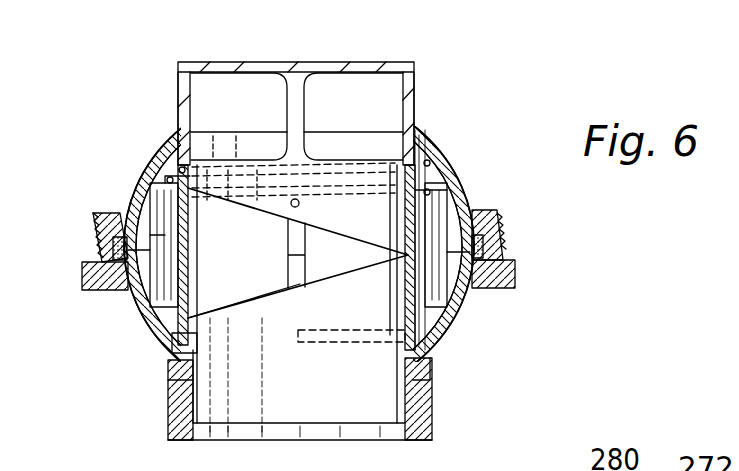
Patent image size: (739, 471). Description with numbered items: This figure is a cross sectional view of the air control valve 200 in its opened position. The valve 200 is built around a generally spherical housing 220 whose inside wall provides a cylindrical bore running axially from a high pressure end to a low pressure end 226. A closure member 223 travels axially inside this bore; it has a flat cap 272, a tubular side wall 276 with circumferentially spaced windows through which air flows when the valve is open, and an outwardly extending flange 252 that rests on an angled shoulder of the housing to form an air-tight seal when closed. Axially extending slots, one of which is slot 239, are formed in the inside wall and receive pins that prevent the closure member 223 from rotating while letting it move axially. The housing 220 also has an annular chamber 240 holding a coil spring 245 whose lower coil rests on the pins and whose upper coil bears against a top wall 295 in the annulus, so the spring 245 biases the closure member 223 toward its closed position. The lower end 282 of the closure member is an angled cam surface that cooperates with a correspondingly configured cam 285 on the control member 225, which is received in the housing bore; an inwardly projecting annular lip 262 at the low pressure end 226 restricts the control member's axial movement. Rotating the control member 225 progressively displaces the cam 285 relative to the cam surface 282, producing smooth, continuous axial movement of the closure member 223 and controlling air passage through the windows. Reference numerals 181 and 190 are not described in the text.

The air control valve 200 is at (130, 324).
The retaining ring 181 is at (190, 408).
The base plate 190 is at (427, 433).
The housing 220 is at (458, 190).
The closure member 223 is at (312, 87).
The control member 225 is at (416, 398).
The low pressure end 226 is at (420, 355).
The axially extending slot 239 is at (299, 243).
The annular chamber 240 is at (110, 233).
The coil spring 245 is at (175, 184).
The outwardly extending flange 252 is at (414, 70).
The inwardly projecting annular lip 262 is at (193, 350).
The cap 272 is at (232, 62).
The tubular side wall 276 is at (178, 116).
The lower end 282 is at (229, 203).
The cam 285 is at (217, 315).
The top wall 295 is at (430, 160).